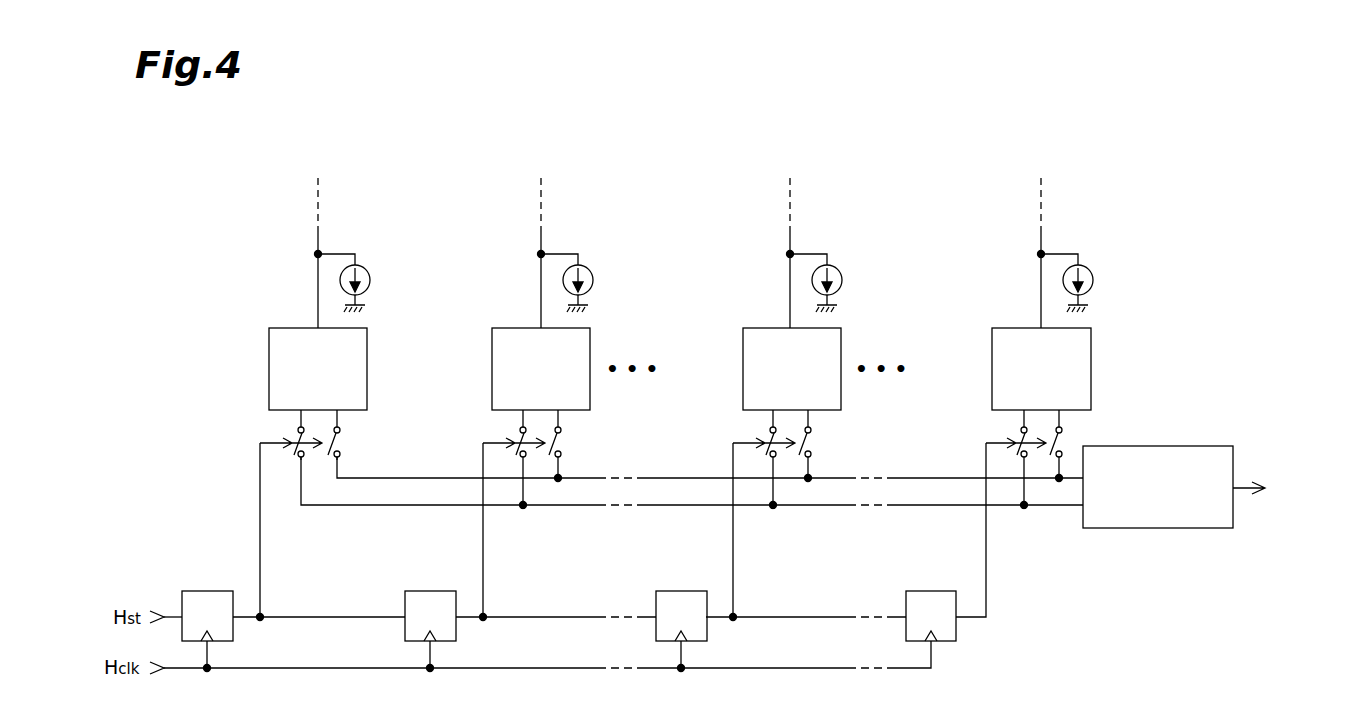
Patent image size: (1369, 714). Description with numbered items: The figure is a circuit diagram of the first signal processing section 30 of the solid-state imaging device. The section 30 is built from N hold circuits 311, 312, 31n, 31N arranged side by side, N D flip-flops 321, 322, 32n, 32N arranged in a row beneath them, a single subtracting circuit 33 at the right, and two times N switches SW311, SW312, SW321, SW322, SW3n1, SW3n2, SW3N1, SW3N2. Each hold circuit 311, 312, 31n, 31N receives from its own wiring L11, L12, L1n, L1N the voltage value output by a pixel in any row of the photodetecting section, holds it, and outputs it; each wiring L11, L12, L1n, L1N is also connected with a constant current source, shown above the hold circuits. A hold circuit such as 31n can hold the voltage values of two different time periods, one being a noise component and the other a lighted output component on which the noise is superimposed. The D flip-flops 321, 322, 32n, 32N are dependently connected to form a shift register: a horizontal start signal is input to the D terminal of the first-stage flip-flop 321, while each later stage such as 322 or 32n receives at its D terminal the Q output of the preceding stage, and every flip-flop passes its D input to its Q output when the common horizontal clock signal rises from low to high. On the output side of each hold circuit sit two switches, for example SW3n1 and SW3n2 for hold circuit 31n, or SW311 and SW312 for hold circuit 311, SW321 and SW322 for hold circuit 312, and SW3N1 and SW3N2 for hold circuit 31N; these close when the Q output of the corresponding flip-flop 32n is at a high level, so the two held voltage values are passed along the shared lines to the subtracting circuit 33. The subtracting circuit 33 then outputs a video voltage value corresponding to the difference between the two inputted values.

The first signal processing section 30 is at (1150, 208).
The wiring L11 is at (318, 279).
The wiring L12 is at (541, 279).
The wiring L1n is at (790, 279).
The wiring L1N is at (1041, 279).
The hold circuit 311 is at (269, 369).
The hold circuit 312 is at (492, 369).
The hold circuit 31n is at (743, 369).
The hold circuit 31N is at (992, 369).
The switch SW311 is at (277, 435).
The switch SW312 is at (365, 435).
The switch SW321 is at (500, 457).
The switch SW322 is at (586, 444).
The switch SW3n1 is at (750, 457).
The switch SW3n2 is at (835, 444).
The switch SW3N1 is at (1000, 457).
The switch SW3N2 is at (1087, 444).
The D flip-flop 321 is at (207, 591).
The D flip-flop 322 is at (430, 591).
The D flip-flop 32n is at (681, 591).
The D flip-flop 32N is at (931, 591).
The subtracting circuit 33 is at (1160, 528).